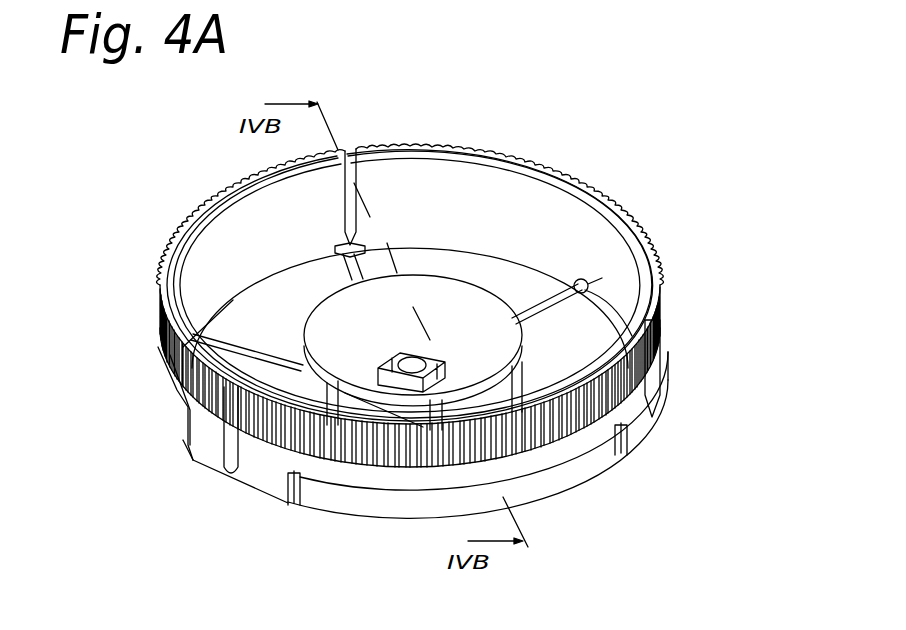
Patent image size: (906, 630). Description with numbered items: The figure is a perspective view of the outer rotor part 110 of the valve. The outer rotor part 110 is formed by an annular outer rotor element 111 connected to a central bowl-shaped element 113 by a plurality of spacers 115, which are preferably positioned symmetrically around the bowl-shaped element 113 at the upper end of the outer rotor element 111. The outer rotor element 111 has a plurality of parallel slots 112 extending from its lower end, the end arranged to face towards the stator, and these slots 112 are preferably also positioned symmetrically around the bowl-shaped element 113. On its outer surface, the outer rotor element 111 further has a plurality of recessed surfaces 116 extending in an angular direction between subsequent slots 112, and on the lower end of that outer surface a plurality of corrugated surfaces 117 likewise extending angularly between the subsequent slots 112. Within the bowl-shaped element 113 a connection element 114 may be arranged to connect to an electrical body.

The outer rotor part 110 is at (409, 305).
The annular outer rotor element 111 is at (633, 422).
The parallel slots 112 is at (232, 466).
The central bowl-shaped element 113 is at (378, 334).
The connection element 114 is at (620, 393).
The spacers 115 is at (602, 268).
The recessed surfaces 116 is at (537, 488).
The corrugated surfaces 117 is at (160, 344).